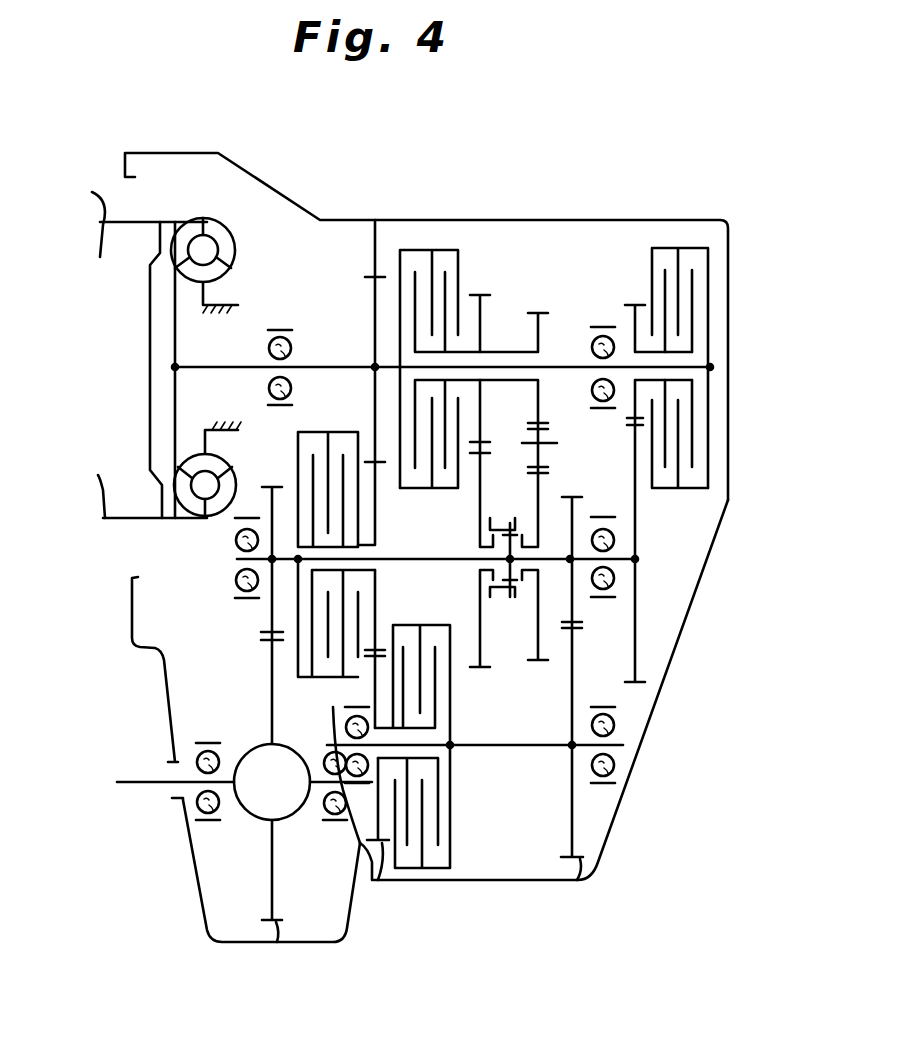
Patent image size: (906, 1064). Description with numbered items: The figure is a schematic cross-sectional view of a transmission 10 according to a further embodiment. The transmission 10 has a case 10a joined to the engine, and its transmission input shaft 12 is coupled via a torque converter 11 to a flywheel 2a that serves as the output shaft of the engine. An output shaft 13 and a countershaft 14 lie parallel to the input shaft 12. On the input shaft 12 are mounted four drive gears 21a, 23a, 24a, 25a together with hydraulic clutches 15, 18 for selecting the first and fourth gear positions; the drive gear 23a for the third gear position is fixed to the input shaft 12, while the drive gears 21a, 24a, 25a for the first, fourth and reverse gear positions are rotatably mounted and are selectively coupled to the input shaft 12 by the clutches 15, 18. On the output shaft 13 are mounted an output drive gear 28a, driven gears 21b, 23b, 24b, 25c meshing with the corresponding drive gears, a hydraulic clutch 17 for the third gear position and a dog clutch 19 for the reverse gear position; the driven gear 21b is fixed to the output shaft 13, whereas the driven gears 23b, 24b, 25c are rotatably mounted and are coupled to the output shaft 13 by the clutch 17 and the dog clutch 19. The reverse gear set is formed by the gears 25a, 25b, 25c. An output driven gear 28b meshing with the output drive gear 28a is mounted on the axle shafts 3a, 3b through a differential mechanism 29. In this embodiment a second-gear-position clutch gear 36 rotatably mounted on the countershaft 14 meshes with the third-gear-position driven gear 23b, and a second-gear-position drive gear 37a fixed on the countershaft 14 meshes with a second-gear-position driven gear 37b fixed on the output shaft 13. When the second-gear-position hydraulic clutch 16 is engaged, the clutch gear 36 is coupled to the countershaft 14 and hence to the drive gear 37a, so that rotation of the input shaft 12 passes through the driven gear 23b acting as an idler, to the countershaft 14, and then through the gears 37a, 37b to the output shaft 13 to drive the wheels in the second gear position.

The transmission 10 is at (678, 90).
The case 10a is at (716, 540).
The flywheel 2a is at (118, 237).
The torque converter 11 is at (233, 253).
The transmission input shaft 12 is at (338, 360).
The output shaft 13 is at (397, 562).
The countershaft 14 is at (503, 748).
The first-gear-position hydraulic clutch 15 is at (695, 243).
The second-gear-position hydraulic clutch 16 is at (447, 870).
The hydraulic clutch 17 is at (297, 450).
The fourth-gear-position hydraulic clutch 18 is at (428, 262).
The dog clutch 19 is at (507, 518).
The drive gear 21a is at (633, 305).
The driven gear 21b is at (637, 683).
The drive gear 23a is at (373, 262).
The driven gear 23b is at (382, 468).
The drive gear 24a is at (485, 292).
The driven gear 24b is at (488, 668).
The drive gear 25a is at (535, 308).
The reverse gear 25b is at (542, 427).
The driven gear 25c is at (542, 662).
The output drive gear 28a is at (265, 480).
The output driven gear 28b is at (277, 942).
The differential mechanism 29 is at (263, 760).
The axle shaft 3a is at (138, 787).
The axle shaft 3b is at (322, 793).
The second-gear-position clutch gear 36 is at (390, 883).
The second-gear-position drive gear 37a is at (572, 883).
The second-gear-position driven gear 37b is at (570, 495).